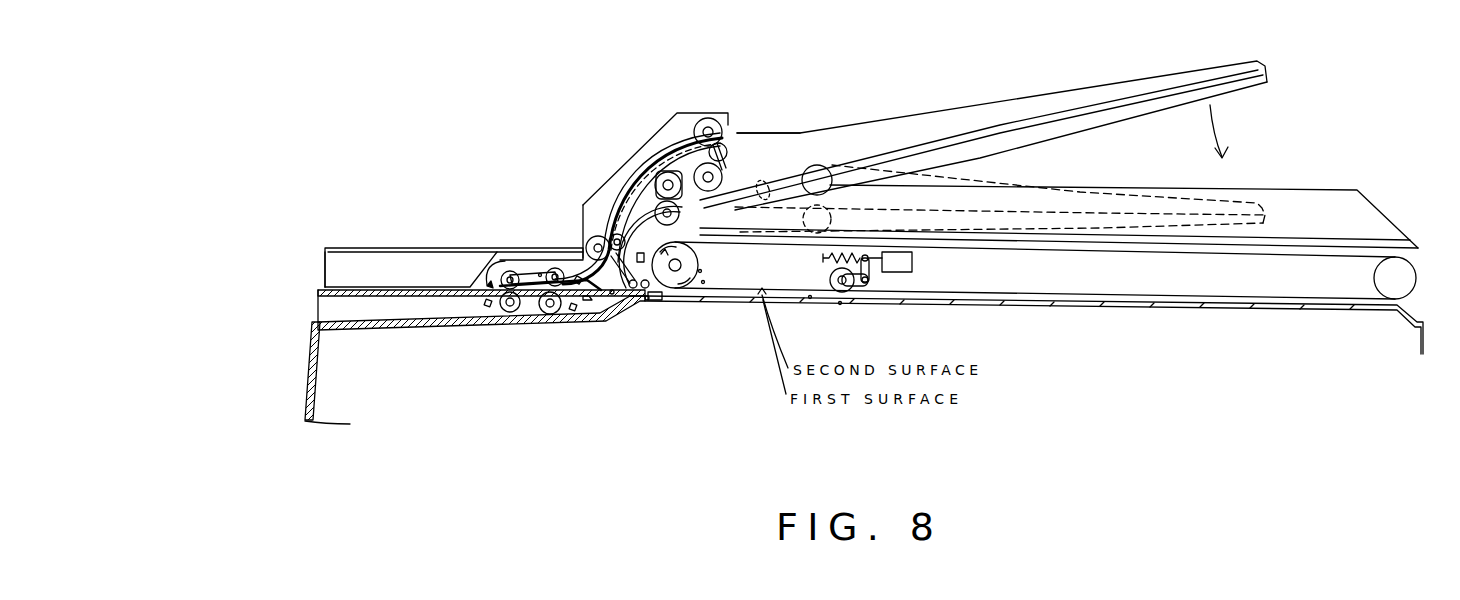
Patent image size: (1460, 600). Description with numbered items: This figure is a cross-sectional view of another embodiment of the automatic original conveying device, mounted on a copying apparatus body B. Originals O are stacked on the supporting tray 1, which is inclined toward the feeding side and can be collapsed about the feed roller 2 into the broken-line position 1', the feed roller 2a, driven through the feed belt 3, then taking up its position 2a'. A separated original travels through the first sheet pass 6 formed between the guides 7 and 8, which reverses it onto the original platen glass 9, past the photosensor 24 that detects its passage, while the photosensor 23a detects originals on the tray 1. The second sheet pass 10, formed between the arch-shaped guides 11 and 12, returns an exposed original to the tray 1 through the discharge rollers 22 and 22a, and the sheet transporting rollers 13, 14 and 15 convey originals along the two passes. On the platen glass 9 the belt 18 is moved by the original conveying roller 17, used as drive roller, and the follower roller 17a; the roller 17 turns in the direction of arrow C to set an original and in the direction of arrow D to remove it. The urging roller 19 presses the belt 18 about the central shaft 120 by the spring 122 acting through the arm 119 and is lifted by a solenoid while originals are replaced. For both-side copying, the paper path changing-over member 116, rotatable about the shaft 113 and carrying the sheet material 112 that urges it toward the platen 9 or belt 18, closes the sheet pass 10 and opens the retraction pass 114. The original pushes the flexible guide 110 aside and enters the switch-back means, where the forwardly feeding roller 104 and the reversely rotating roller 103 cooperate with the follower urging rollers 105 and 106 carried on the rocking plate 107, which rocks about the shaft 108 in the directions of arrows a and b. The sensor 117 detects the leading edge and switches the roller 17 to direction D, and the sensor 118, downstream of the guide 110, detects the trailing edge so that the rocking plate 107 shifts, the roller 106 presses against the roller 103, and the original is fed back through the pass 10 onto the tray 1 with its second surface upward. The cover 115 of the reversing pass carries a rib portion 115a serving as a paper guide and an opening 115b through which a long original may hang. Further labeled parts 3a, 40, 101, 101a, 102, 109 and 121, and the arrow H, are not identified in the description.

The supporting tray 1 is at (983, 123).
The collapsed position of supporting tray 1' is at (1000, 188).
The feed roller 2 is at (645, 172).
The feed roller 2a is at (830, 142).
The collapsed position of feed roller 2a' is at (842, 219).
The feed belt 3 is at (780, 174).
The roller 3a is at (723, 178).
The first sheet pass 6 is at (612, 207).
The guide 7 is at (615, 215).
The guide 8 is at (608, 236).
The original platen glass 9 is at (840, 305).
The second sheet pass 10 is at (668, 150).
The arch-shaped guide 11 is at (625, 200).
The arch-shaped guide 12 is at (912, 262).
The sheet transporting roller 13 is at (722, 248).
The sheet transporting roller 14 is at (582, 205).
The sheet transporting roller 15 is at (596, 237).
The original conveying roller 17 is at (697, 256).
The original conveying roller 17a is at (1374, 278).
The belt 18 is at (1240, 257).
The urging roller 19 is at (842, 293).
The discharge roller 22 is at (710, 118).
The discharge roller 22a is at (745, 133).
The photosensor 23a is at (761, 199).
The photosensor 24 is at (662, 298).
The sheet 40 is at (635, 185).
The base plate 101 is at (633, 320).
The side wall 101a is at (322, 312).
The plate 102 is at (553, 327).
The reversely rotating roller 103 is at (550, 315).
The forwardly feeding roller 104 is at (510, 312).
The follower urging roller 105 is at (518, 273).
The follower urging roller 106 is at (549, 270).
The rocking plate 107 is at (497, 265).
The shaft 108 is at (542, 268).
The guide 109 is at (612, 295).
The flexible guide 110 is at (579, 284).
The sheet material 112 is at (704, 282).
The shaft 113 is at (636, 298).
The retraction pass 114 is at (585, 301).
The cover 115 is at (419, 249).
The rib portion 115a is at (383, 258).
The opening 115b is at (333, 285).
The paper path changing-over member 116 is at (648, 300).
The sensor 117 is at (484, 303).
The sensor 118 is at (573, 311).
The arm 119 is at (860, 292).
The central shaft 120 is at (870, 287).
The spring 121 is at (821, 258).
The spring 122 is at (835, 272).
The copying apparatus body B is at (1423, 340).
The direction of arrow C is at (701, 271).
The direction of arrow D is at (659, 263).
The cover movement direction H is at (1229, 131).
The original O is at (810, 298).
The direction of arrow a is at (540, 272).
The direction of arrow b is at (522, 275).